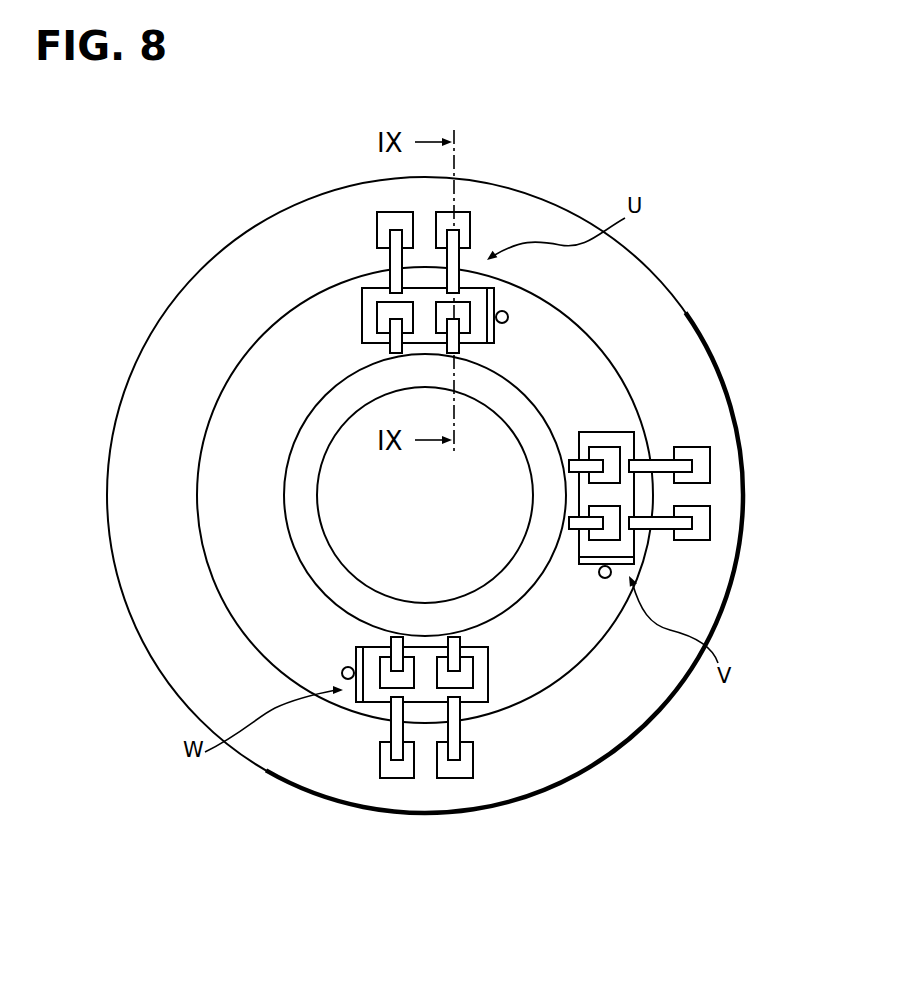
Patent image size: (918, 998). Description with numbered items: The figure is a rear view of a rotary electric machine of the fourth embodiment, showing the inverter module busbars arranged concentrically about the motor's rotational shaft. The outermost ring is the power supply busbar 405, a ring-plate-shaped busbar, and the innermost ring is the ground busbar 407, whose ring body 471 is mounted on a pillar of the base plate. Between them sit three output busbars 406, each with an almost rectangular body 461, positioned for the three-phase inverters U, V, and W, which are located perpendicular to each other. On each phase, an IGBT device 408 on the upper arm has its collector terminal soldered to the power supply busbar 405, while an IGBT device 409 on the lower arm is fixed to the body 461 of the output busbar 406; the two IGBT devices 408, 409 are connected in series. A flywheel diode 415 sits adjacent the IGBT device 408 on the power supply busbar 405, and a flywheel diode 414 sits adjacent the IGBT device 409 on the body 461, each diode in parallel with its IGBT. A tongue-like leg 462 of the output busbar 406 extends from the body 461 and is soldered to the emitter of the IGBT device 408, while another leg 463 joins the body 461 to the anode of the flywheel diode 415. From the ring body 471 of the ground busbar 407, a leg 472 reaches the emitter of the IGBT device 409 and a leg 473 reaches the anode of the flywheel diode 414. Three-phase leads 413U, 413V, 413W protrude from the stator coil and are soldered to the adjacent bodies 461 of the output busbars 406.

The power supply busbar 405 is at (638, 277).
The output busbar 406 is at (643, 427).
The ground busbar 407 is at (276, 496).
The IGBT device 408 is at (462, 218).
The IGBT device 409 is at (463, 312).
The three-phase lead 413U is at (509, 317).
The three-phase lead 413V is at (607, 580).
The three-phase lead 413W is at (341, 673).
The flywheel diode 414 is at (384, 314).
The flywheel diode 415 is at (392, 222).
The body 461 is at (590, 437).
The leg 462 is at (458, 258).
The leg 463 is at (384, 262).
The ring body 471 is at (290, 542).
The leg 472 is at (462, 350).
The leg 473 is at (388, 350).